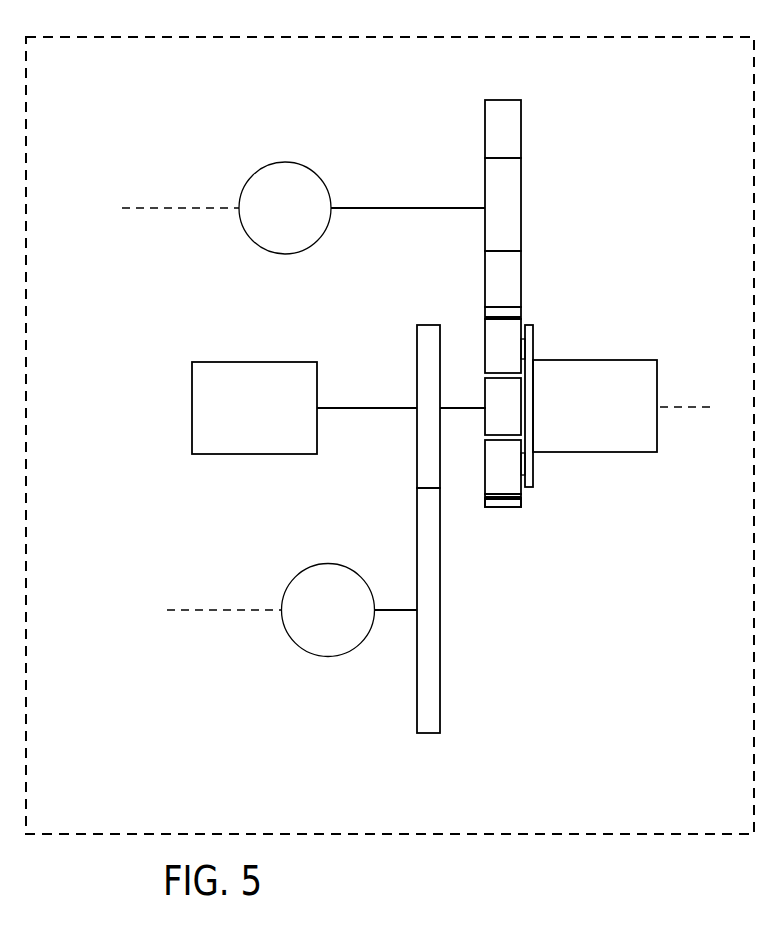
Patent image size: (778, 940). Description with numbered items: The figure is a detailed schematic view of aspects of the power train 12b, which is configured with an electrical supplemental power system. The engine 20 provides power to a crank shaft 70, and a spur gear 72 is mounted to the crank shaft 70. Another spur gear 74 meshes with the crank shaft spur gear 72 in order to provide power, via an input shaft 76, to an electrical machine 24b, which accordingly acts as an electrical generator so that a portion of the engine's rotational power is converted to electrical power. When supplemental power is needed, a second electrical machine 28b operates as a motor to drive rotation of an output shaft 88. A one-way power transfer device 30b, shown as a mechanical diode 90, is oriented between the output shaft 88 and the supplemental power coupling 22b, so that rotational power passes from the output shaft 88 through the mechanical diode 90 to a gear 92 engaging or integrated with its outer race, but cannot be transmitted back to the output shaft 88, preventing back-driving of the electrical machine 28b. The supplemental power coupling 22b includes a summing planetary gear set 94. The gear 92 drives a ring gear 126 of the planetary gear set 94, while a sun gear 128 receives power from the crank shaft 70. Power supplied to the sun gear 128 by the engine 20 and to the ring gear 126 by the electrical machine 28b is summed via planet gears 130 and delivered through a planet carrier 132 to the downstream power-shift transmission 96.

The power train 12b is at (708, 787).
The engine 20 is at (228, 362).
The supplemental power coupling 22b is at (545, 444).
The electrical machine 24b is at (328, 657).
The electrical machine 28b is at (283, 162).
The one-way power transfer device 30b is at (542, 386).
The crank shaft 70 is at (392, 408).
The spur gear 72 is at (417, 378).
The spur gear 74 is at (440, 655).
The input shaft 76 is at (393, 612).
The output shaft 88 is at (423, 210).
The mechanical diode 90 is at (521, 225).
The gear 92 is at (521, 275).
The summing planetary gear set 94 is at (545, 444).
The power-shift transmission 96 is at (598, 452).
The ring gear 126 is at (507, 507).
The sun gear 128 is at (486, 420).
The planet gears 130 is at (486, 343).
The planet carrier 132 is at (533, 340).